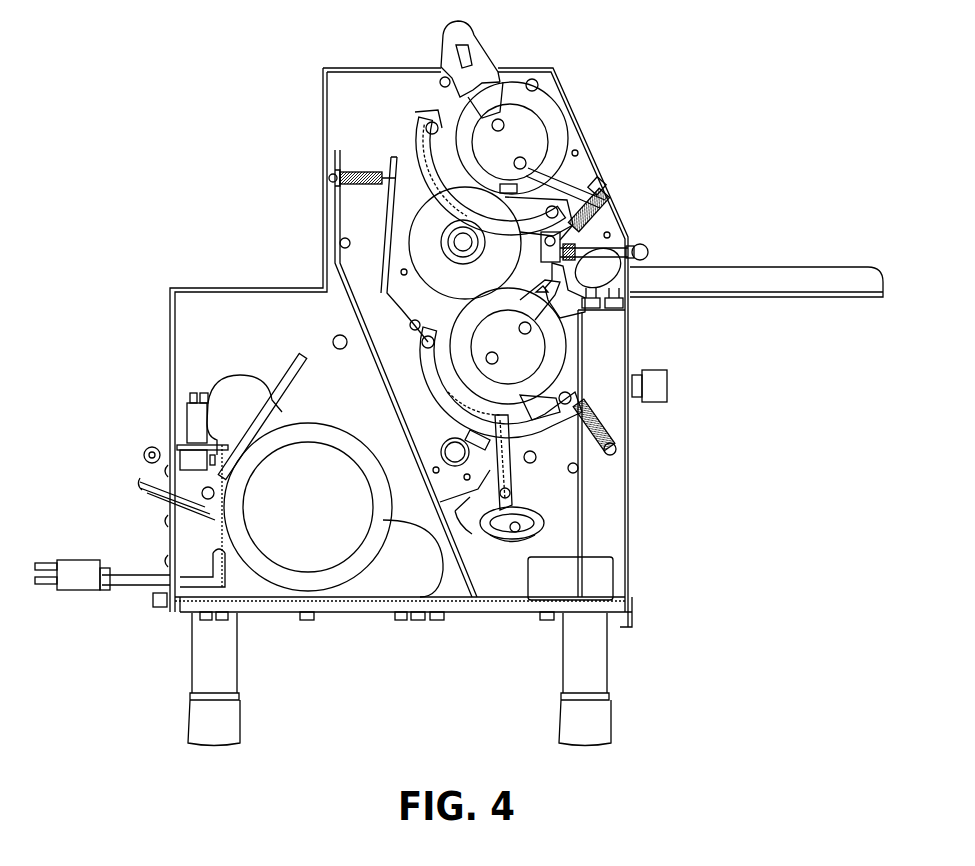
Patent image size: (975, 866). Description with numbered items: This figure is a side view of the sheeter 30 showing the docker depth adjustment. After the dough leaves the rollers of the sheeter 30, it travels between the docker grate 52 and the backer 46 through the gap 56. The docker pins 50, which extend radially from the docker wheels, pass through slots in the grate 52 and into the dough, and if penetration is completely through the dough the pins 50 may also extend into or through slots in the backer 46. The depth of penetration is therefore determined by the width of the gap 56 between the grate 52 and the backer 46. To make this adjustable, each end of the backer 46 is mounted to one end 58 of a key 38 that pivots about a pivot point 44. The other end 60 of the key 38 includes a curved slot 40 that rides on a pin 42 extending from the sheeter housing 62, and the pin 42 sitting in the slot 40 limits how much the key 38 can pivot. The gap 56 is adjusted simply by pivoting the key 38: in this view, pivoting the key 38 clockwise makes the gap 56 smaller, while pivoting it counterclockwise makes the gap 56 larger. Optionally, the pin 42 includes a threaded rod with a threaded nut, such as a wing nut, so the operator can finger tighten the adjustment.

The sheeter 30 is at (594, 70).
The key 38 is at (528, 496).
The curved slot 40 is at (543, 521).
The pin 42 is at (521, 530).
The pivot point 44 is at (508, 491).
The backer 46 is at (482, 444).
The docker pins 50 is at (480, 442).
The docker grate 52 is at (456, 512).
The gap 56 is at (481, 475).
The end of key 58 is at (503, 420).
The other end of key 60 is at (517, 541).
The sheeter housing 62 is at (587, 450).